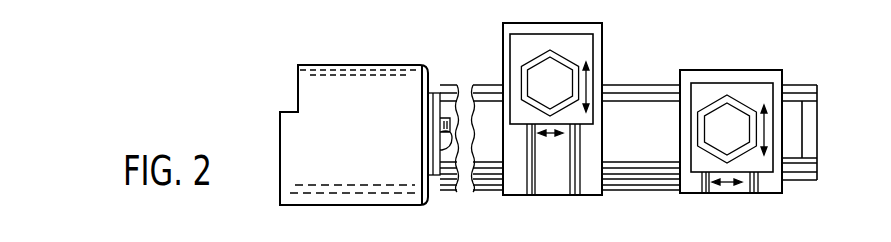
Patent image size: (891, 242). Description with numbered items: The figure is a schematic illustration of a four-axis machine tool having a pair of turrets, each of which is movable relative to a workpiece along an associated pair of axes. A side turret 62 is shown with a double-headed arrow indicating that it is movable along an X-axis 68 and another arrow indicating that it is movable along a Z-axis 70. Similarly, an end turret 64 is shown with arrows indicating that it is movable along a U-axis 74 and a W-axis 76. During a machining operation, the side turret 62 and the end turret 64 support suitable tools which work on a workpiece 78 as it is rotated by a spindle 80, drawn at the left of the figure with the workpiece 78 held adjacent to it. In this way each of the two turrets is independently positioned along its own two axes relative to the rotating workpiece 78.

The side turret 62 is at (547, 80).
The end turret 64 is at (742, 140).
The X-axis 68 is at (583, 84).
The Z-axis 70 is at (550, 137).
The U-axis 74 is at (767, 133).
The W-axis 76 is at (730, 188).
The workpiece 78 is at (440, 120).
The spindle 80 is at (428, 139).